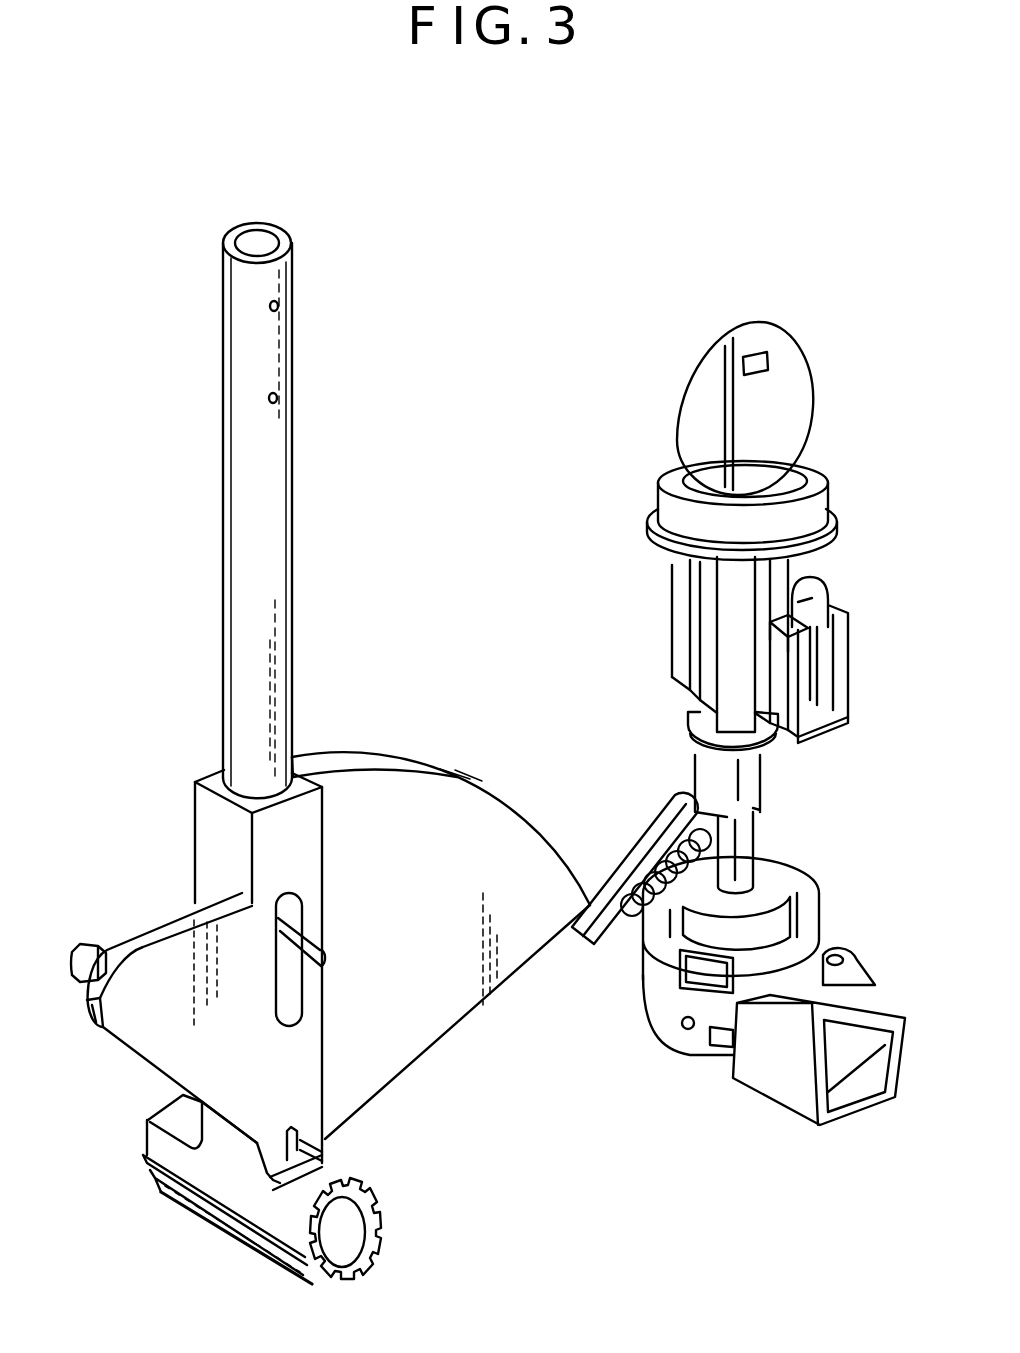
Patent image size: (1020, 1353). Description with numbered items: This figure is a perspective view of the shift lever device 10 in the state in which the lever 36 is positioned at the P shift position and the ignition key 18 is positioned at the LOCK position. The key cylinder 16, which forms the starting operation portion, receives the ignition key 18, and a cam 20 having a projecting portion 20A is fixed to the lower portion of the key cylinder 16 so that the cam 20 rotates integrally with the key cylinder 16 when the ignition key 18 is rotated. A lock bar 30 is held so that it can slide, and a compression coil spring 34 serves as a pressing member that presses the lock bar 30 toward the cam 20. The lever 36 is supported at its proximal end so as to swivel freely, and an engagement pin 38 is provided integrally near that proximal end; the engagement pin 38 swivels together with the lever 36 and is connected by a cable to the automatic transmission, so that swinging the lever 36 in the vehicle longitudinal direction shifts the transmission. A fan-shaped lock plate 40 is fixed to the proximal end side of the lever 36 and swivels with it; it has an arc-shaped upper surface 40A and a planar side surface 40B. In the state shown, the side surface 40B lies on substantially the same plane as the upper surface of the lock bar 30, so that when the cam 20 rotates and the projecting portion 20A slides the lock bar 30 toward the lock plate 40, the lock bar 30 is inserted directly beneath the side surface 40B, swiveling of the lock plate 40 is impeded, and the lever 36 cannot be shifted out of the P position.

The shift lever device 10 is at (166, 716).
The key cylinder 16 is at (827, 472).
The ignition key 18 is at (793, 341).
The cam 20 is at (778, 783).
The projecting portion 20A is at (710, 767).
The lock bar 30 is at (640, 840).
The compression coil spring 34 is at (632, 906).
The lever 36 is at (222, 408).
The engagement pin 38 is at (75, 953).
The lock plate 40 is at (464, 765).
The upper surface 40A is at (343, 765).
The side surface 40B is at (448, 1037).